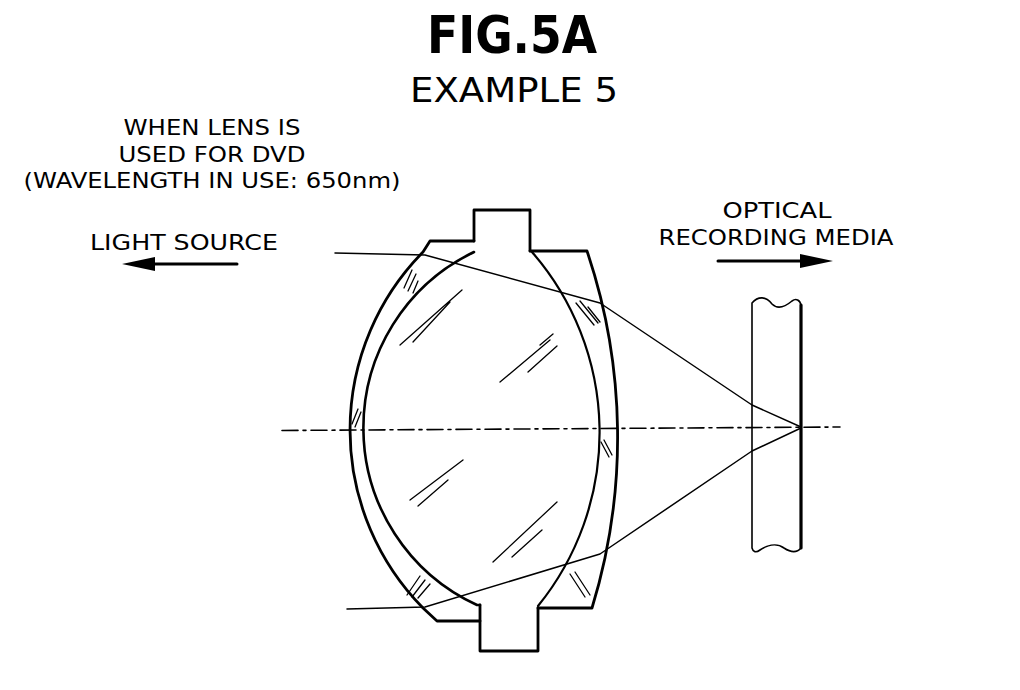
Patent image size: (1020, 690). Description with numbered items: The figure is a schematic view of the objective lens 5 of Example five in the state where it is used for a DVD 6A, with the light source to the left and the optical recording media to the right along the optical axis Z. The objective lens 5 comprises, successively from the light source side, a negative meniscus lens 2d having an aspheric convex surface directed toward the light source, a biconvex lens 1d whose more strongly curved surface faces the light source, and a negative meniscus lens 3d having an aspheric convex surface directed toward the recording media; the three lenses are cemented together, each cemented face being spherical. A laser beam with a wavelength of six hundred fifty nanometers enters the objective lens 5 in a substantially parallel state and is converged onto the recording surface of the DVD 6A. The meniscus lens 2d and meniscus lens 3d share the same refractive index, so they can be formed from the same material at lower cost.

The objective lens 5 is at (496, 191).
The biconvex lens 1d is at (517, 227).
The negative meniscus lens 2d is at (446, 248).
The negative meniscus lens 3d is at (575, 262).
The DVD 6A is at (805, 316).
The optical axis Z is at (310, 433).